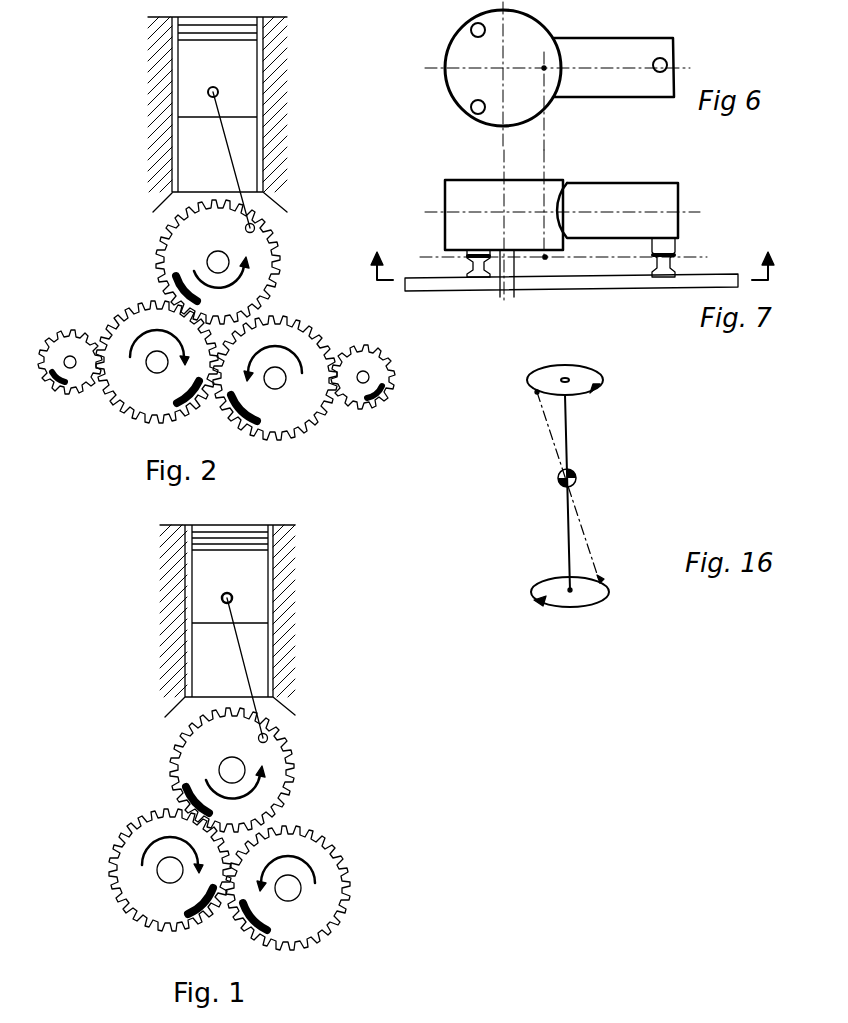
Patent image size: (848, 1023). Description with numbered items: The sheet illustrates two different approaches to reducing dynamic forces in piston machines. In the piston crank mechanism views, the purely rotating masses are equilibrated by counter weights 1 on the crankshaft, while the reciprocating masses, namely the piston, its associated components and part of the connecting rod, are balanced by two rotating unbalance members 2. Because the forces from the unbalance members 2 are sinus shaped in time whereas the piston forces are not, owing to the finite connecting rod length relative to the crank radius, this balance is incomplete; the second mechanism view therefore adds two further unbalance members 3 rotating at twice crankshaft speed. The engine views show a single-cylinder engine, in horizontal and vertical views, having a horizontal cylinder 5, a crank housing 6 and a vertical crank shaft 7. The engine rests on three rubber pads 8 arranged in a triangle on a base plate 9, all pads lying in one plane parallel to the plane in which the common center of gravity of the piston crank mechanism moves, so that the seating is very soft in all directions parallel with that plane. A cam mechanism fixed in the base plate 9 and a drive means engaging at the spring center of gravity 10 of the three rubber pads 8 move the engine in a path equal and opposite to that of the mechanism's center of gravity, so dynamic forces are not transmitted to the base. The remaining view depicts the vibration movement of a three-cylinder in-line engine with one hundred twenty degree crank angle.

In FIG. 2, the counter weights 1 is at (167, 279).
In FIG. 1, the counter weights 1 is at (178, 797).
In FIG. 2, the unbalance members 2 is at (228, 416).
In FIG. 1, the unbalance members 2 is at (205, 913).
In FIG. 2, the unbalance members 3 is at (62, 388).
In FIG. 6, the cylinder 5 is at (602, 38).
In FIG. 7, the cylinder 5 is at (590, 193).
In FIG. 6, the crank housing 6 is at (446, 48).
In FIG. 7, the crank shaft 7 is at (517, 262).
In FIG. 6, the rubber pads 8 is at (486, 30).
In FIG. 7, the rubber pads 8 is at (675, 260).
In FIG. 7, the base plate 9 is at (442, 291).
In FIG. 6, the center of gravity 10 is at (550, 58).
In FIG. 7, the center of gravity 10 is at (549, 259).